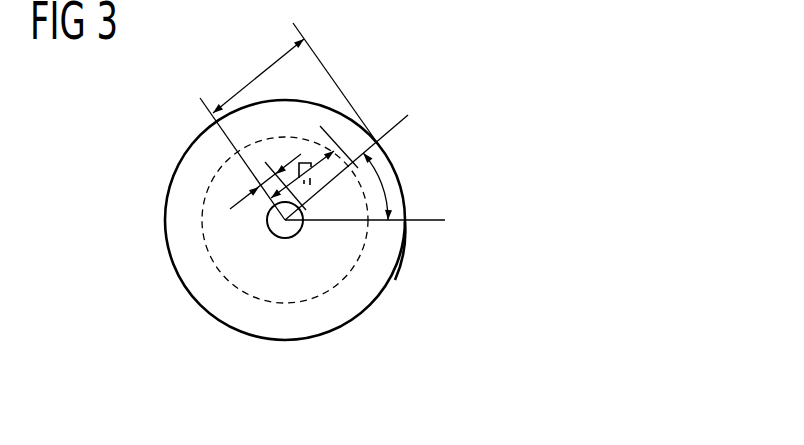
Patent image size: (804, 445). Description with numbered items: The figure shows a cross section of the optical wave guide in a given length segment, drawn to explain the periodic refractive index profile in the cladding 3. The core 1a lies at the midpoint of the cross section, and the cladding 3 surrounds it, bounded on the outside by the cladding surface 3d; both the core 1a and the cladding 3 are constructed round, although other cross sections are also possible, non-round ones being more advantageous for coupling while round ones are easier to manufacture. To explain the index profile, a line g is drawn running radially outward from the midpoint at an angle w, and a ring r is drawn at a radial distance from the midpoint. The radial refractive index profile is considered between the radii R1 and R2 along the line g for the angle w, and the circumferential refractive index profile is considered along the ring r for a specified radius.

The cladding 3 is at (327, 318).
The cladding surface 3d is at (402, 250).
The core 1a is at (290, 238).
The ring r is at (352, 270).
The line g is at (393, 128).
The angle w is at (377, 186).
The radius R1 is at (288, 168).
The radius R2 is at (291, 121).